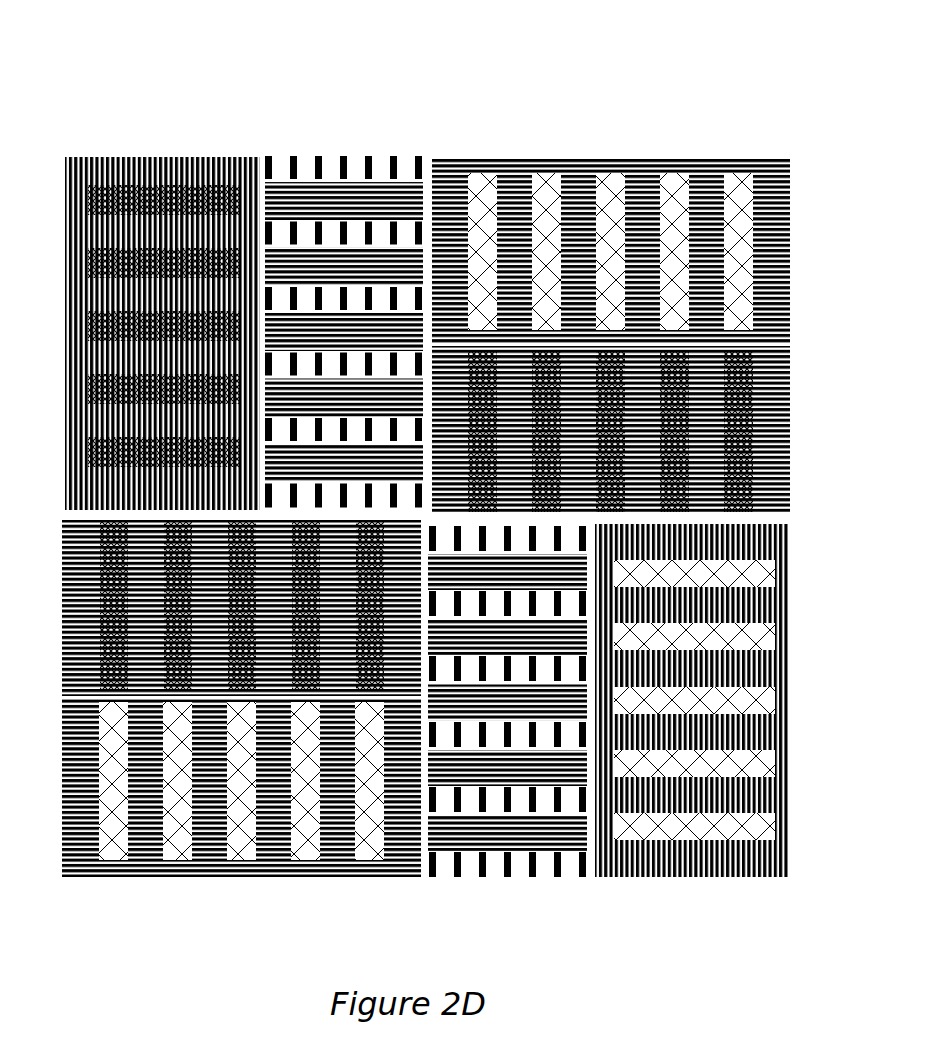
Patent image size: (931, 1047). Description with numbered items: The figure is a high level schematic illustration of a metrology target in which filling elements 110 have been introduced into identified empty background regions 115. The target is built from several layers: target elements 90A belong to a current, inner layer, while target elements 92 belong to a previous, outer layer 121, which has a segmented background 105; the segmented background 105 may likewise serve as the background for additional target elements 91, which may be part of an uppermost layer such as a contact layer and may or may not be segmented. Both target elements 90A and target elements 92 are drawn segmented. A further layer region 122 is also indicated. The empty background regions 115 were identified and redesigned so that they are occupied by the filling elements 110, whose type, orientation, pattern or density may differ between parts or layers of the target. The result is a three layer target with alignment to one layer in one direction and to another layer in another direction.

The previous layer 121 is at (153, 93).
The second grating layer region 122 is at (320, 93).
The segmented background 105 is at (66, 157).
The empty background regions 115 is at (308, 155).
The filling elements 110 is at (322, 232).
The target elements 90A is at (380, 245).
The additional target elements 91 is at (490, 158).
The target elements 92 is at (758, 357).